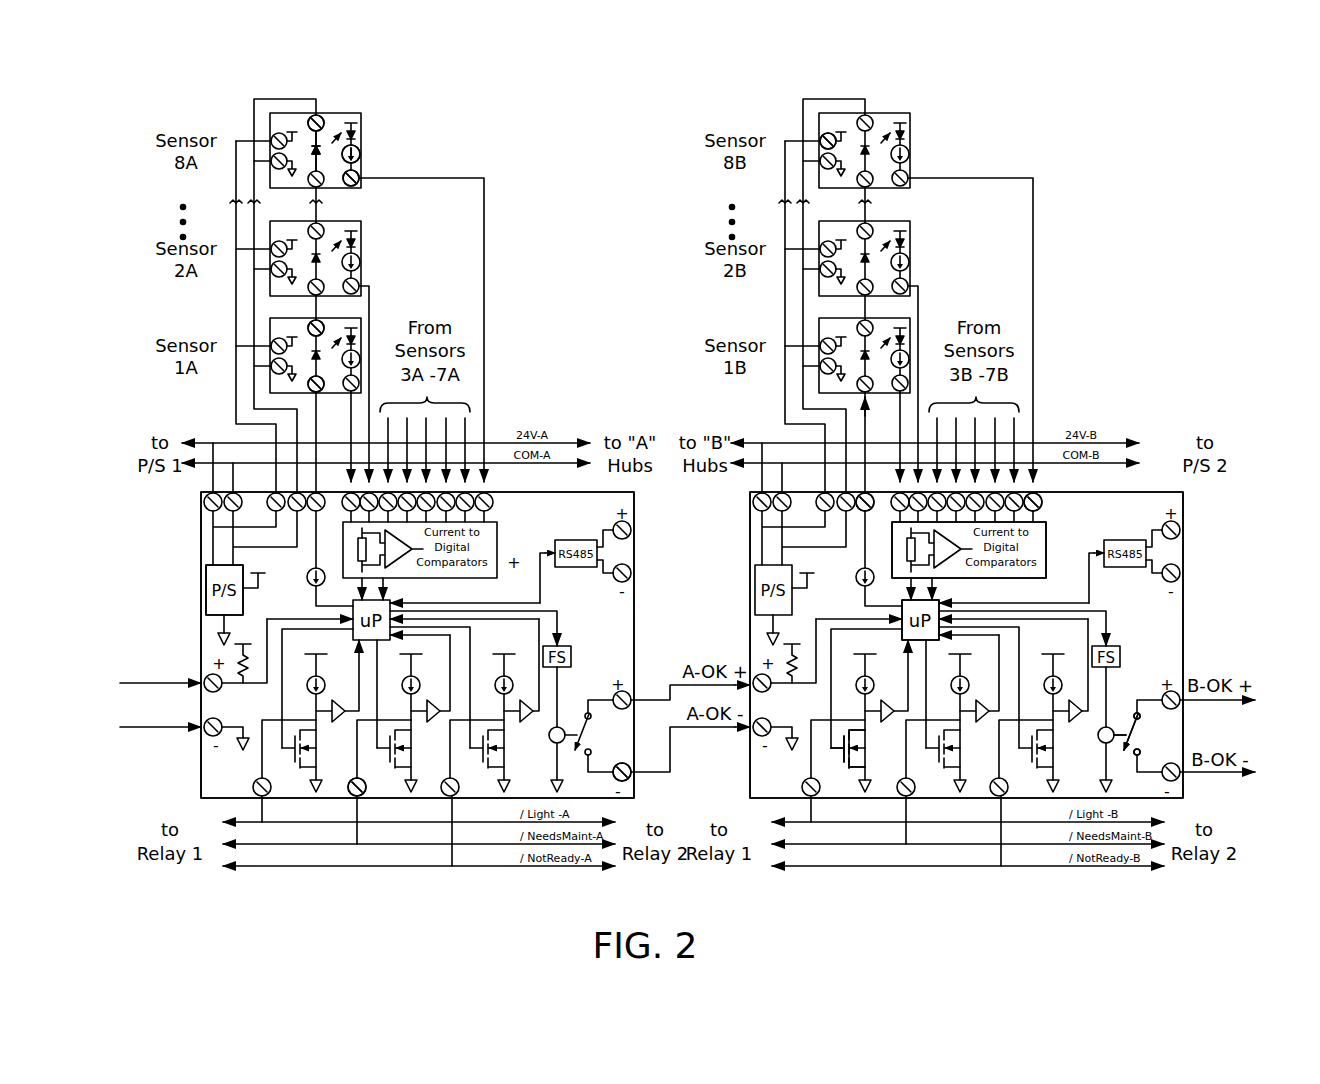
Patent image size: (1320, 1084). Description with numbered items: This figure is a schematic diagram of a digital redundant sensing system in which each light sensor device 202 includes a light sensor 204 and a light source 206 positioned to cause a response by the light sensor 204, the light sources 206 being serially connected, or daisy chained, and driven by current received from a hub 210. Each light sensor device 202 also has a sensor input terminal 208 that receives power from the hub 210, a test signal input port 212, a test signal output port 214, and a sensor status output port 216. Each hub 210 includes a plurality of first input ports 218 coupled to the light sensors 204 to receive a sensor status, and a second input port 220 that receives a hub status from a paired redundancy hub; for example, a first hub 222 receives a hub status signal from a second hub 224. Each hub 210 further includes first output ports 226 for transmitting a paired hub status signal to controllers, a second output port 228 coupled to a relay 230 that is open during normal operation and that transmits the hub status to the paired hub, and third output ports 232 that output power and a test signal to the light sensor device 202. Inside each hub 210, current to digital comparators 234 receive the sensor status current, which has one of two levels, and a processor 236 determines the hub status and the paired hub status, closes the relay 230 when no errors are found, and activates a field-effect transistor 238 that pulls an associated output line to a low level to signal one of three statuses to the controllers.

The light sensor device 202 is at (1136, 98).
The light sensor 204 is at (362, 146).
The light source 206 is at (322, 133).
The sensor input terminal 208 is at (812, 144).
The hub 210 is at (652, 545).
The test signal input port 212 is at (306, 384).
The test signal output port 214 is at (326, 321).
The sensor status output port 216 is at (358, 187).
The first input ports 218 is at (1040, 482).
The second input port 220 is at (187, 699).
The first hub 222 is at (201, 552).
The second hub 224 is at (1183, 620).
The first output ports 226 is at (346, 801).
The second output port 228 is at (638, 727).
The relay 230 is at (1150, 735).
The third output ports 232 is at (877, 484).
The current to digital comparators 234 is at (1049, 553).
The processor 236 is at (941, 603).
The field-effect transistor 238 is at (878, 762).